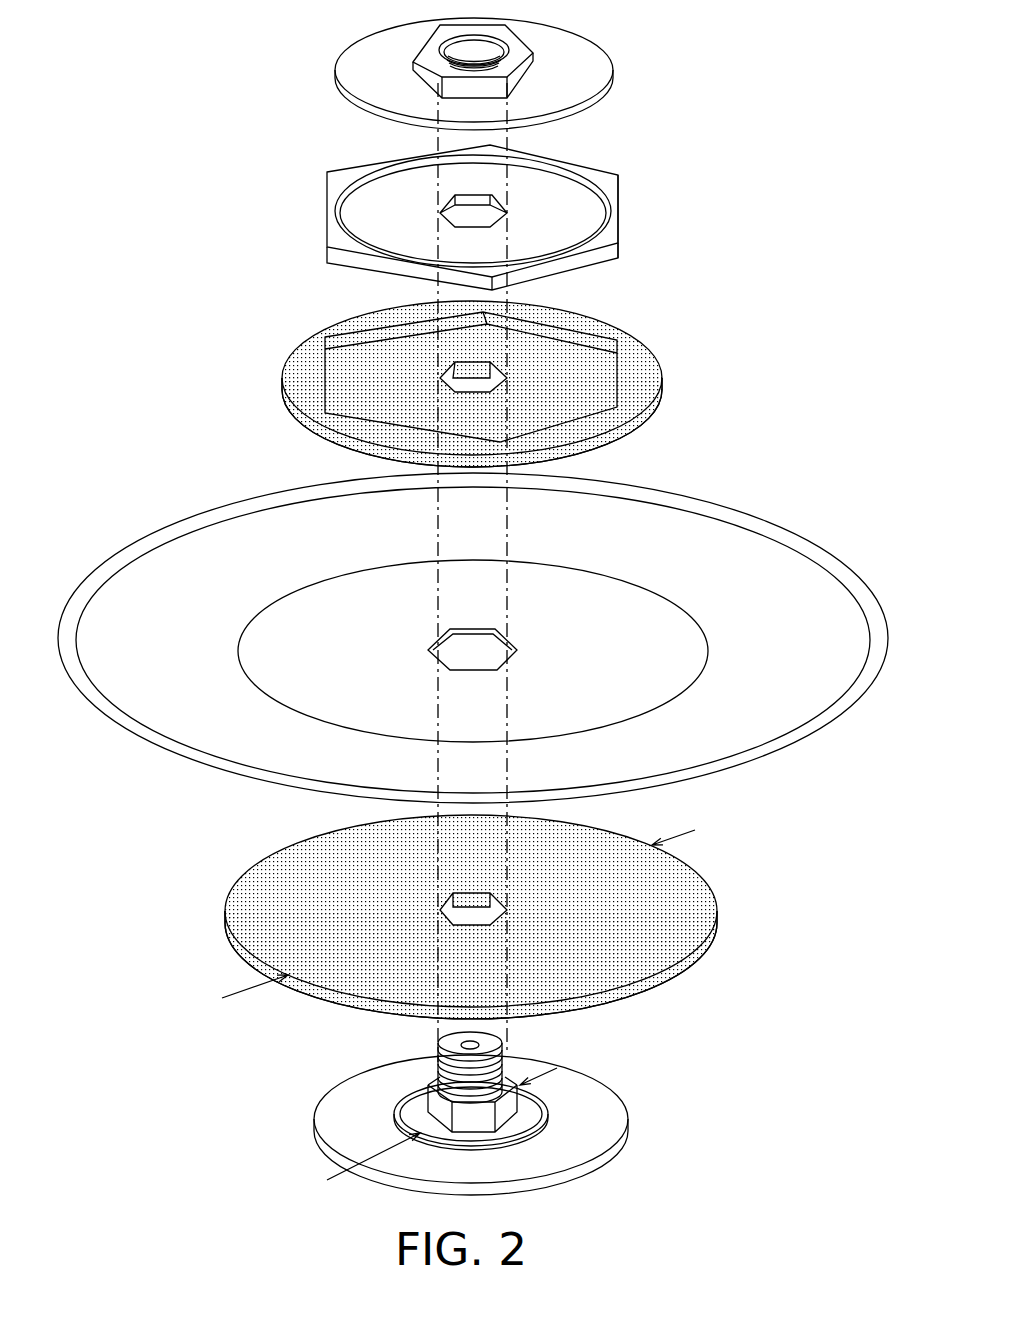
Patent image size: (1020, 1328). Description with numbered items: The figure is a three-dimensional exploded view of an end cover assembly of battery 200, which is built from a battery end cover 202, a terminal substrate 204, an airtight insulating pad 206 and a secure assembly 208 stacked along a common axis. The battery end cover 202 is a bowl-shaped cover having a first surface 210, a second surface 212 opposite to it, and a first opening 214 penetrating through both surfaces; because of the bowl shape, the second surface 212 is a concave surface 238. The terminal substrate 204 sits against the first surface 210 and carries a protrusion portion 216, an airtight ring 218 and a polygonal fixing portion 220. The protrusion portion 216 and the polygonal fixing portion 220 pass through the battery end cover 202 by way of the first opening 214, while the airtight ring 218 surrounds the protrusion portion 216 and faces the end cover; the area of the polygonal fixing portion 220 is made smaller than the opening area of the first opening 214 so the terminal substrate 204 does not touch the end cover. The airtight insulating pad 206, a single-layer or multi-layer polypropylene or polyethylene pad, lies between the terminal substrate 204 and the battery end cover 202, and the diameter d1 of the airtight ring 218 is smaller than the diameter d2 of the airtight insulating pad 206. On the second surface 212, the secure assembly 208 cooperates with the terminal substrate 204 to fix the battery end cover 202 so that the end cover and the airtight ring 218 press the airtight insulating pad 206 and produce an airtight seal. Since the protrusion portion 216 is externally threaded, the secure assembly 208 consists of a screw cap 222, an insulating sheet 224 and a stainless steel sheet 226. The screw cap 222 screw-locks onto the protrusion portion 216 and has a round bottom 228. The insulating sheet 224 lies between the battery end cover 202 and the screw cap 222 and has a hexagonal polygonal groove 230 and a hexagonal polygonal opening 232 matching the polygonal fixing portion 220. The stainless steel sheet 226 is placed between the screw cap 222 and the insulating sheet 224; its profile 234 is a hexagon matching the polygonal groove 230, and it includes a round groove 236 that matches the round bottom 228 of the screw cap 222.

The end cover assembly of battery 200 is at (176, 128).
The battery end cover 202 is at (90, 588).
The terminal substrate 204 is at (238, 1028).
The airtight insulating pad 206 is at (238, 893).
The secure assembly 208 is at (775, 52).
The first surface 210 is at (755, 762).
The second surface 212 is at (662, 622).
The first opening 214 is at (467, 641).
The protrusion portion 216 is at (447, 1045).
The airtight ring 218 is at (427, 1108).
The polygonal fixing portion 220 is at (420, 1100).
The screw cap 222 is at (533, 53).
The insulating sheet 224 is at (663, 387).
The stainless steel sheet 226 is at (618, 207).
The round bottom 228 is at (362, 72).
The polygonal groove 230 is at (344, 362).
The polygonal opening 232 is at (474, 362).
The profile 234 is at (317, 212).
The round groove 236 is at (568, 168).
The concave surface 238 is at (810, 598).
The diameter of the airtight ring d1 is at (356, 1165).
The diameter of the airtight insulating pad d2 is at (251, 985).